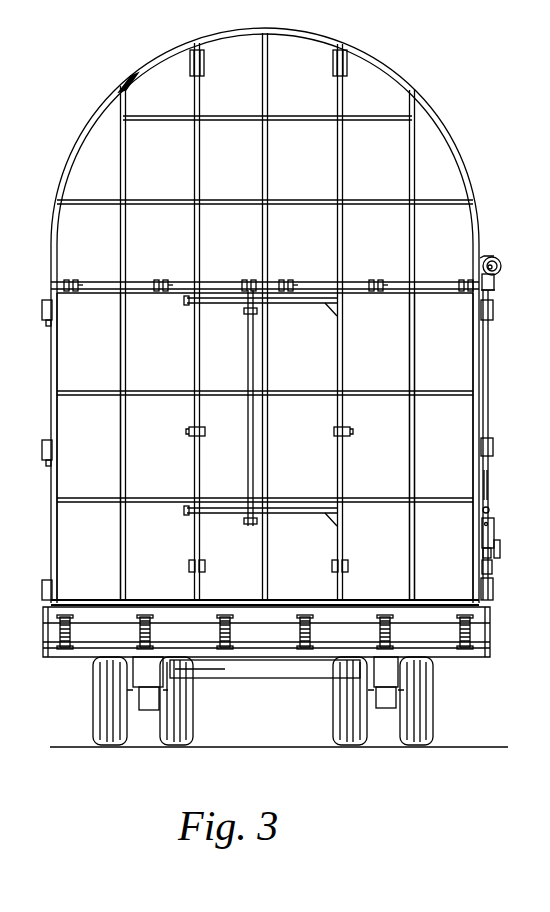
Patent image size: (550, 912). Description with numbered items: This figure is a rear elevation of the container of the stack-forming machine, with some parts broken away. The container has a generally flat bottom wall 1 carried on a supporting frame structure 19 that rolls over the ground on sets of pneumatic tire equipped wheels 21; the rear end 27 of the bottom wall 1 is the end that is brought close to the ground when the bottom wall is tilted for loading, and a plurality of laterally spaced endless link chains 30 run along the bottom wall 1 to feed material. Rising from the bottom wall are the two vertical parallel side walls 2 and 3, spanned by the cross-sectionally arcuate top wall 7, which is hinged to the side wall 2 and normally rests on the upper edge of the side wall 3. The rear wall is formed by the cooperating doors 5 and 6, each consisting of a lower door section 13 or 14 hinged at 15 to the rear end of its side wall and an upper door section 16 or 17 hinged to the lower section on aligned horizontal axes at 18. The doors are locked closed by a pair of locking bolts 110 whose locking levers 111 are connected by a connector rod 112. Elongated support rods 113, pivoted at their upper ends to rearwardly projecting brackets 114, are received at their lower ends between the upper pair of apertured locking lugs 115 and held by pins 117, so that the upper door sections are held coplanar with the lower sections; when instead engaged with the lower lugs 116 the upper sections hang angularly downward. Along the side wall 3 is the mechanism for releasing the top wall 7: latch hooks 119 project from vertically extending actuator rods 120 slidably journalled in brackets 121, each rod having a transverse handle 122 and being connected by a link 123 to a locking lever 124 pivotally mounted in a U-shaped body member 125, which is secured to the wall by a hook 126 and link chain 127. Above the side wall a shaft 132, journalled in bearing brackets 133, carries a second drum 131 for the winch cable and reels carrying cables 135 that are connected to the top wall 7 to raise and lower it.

The bottom wall 1 is at (64, 664).
The side wall 2 is at (48, 380).
The side wall 3 is at (480, 393).
The rear door 5 is at (72, 422).
The rear door 6 is at (458, 423).
The top wall 7 is at (126, 82).
The lower door section 13 is at (76, 481).
The lower door section 14 is at (478, 358).
The hinge 15 is at (44, 316).
The upper door section 16 is at (70, 189).
The upper door section 17 is at (452, 160).
The hinge 18 is at (70, 282).
The supporting frame structure 19 is at (148, 712).
The wheel 21 is at (112, 746).
The rear end 27 is at (272, 664).
The endless link chain 30 is at (72, 620).
The locking bolt 110 is at (318, 304).
The locking lever 111 is at (254, 312).
The connector rod 112 is at (250, 440).
The support rod 113 is at (196, 231).
The bracket 114 is at (203, 62).
The upper locking lug 115 is at (190, 440).
The lower locking lug 116 is at (190, 566).
The pin 117 is at (190, 431).
The latch hook 119 is at (496, 280).
The actuator rod 120 is at (482, 342).
The bracket 121 is at (490, 295).
The handle 122 is at (492, 480).
The link 123 is at (490, 511).
The locking lever 124 is at (499, 550).
The U-shaped body member 125 is at (482, 538).
The hook 126 is at (484, 556).
The link chain 127 is at (484, 568).
The second drum 131 is at (492, 257).
The shaft 132 is at (500, 260).
The bearing bracket 133 is at (500, 267).
The cable 135 is at (486, 258).